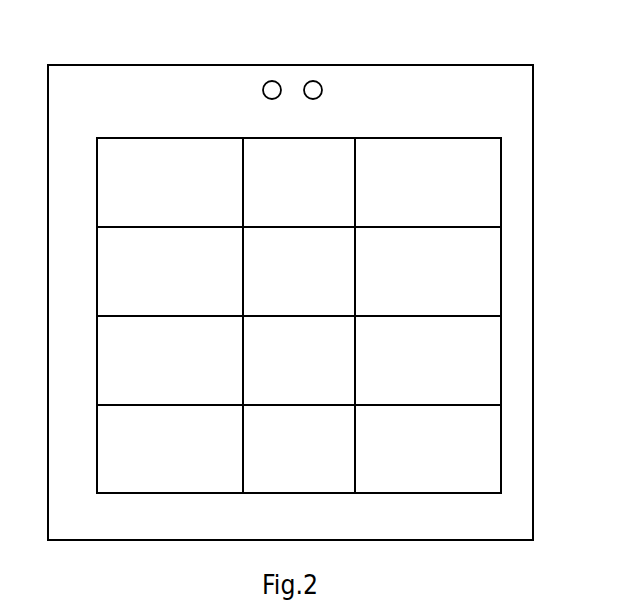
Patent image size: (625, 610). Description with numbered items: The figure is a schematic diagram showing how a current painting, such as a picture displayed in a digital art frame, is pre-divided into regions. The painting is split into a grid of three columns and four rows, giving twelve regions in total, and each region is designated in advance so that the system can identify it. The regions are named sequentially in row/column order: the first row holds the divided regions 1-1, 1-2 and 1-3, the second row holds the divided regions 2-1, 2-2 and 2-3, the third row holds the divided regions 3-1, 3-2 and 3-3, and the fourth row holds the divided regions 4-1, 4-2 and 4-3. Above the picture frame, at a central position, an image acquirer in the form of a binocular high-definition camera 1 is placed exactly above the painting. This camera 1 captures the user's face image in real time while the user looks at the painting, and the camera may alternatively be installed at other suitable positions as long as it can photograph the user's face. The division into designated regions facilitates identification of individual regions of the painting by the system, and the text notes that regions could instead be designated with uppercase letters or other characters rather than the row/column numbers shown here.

The binocular high-definition camera 1 is at (278, 73).
The divided region 1-1 is at (170, 182).
The divided region 1-2 is at (299, 182).
The divided region 1-3 is at (428, 182).
The divided region 2-1 is at (170, 271).
The divided region 2-2 is at (299, 271).
The divided region 2-3 is at (428, 271).
The divided region 3-1 is at (170, 360).
The divided region 3-2 is at (299, 360).
The divided region 3-3 is at (428, 360).
The divided region 4-1 is at (170, 449).
The divided region 4-2 is at (299, 449).
The divided region 4-3 is at (428, 449).